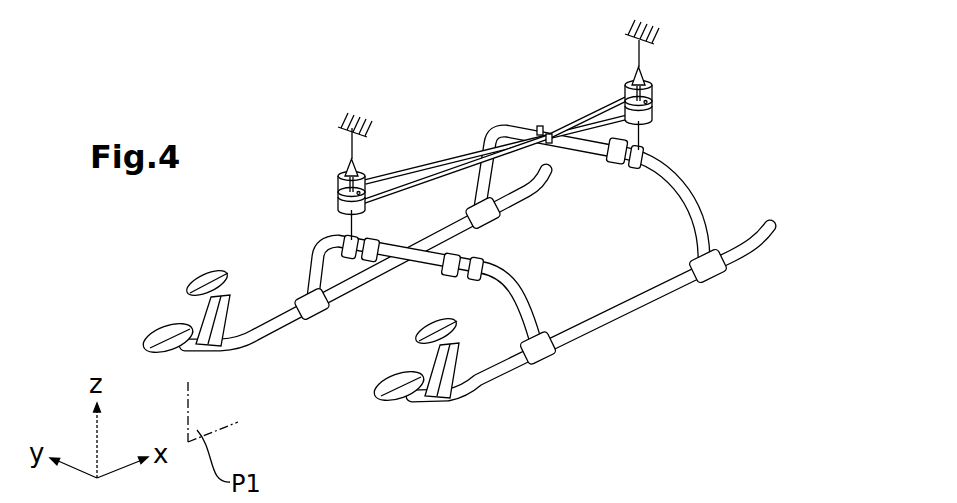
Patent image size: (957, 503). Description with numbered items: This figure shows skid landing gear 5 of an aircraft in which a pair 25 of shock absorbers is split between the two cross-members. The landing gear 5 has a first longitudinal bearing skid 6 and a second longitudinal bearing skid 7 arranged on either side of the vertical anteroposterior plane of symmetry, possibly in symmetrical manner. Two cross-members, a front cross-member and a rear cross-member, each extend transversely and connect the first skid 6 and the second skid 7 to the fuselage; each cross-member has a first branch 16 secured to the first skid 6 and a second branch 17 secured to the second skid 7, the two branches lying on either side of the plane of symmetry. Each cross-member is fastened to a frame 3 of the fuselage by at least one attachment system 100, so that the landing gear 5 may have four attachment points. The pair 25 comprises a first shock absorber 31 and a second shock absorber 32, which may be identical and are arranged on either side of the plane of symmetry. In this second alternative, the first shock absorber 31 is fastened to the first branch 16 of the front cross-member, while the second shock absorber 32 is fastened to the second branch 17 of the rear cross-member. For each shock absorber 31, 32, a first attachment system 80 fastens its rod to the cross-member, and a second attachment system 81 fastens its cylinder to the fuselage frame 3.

The frame 3 is at (374, 126).
The landing gear 5 is at (558, 402).
The first skid 6 is at (360, 293).
The second skid 7 is at (648, 302).
The first branch 16 is at (315, 247).
The second branch 17 is at (688, 212).
The pair of shock absorbers 25 is at (260, 141).
The first shock absorber 31 is at (338, 178).
The second shock absorber 32 is at (653, 94).
The first attachment system 80 is at (347, 240).
The second attachment system 81 is at (343, 118).
The attachment system 100 is at (608, 126).